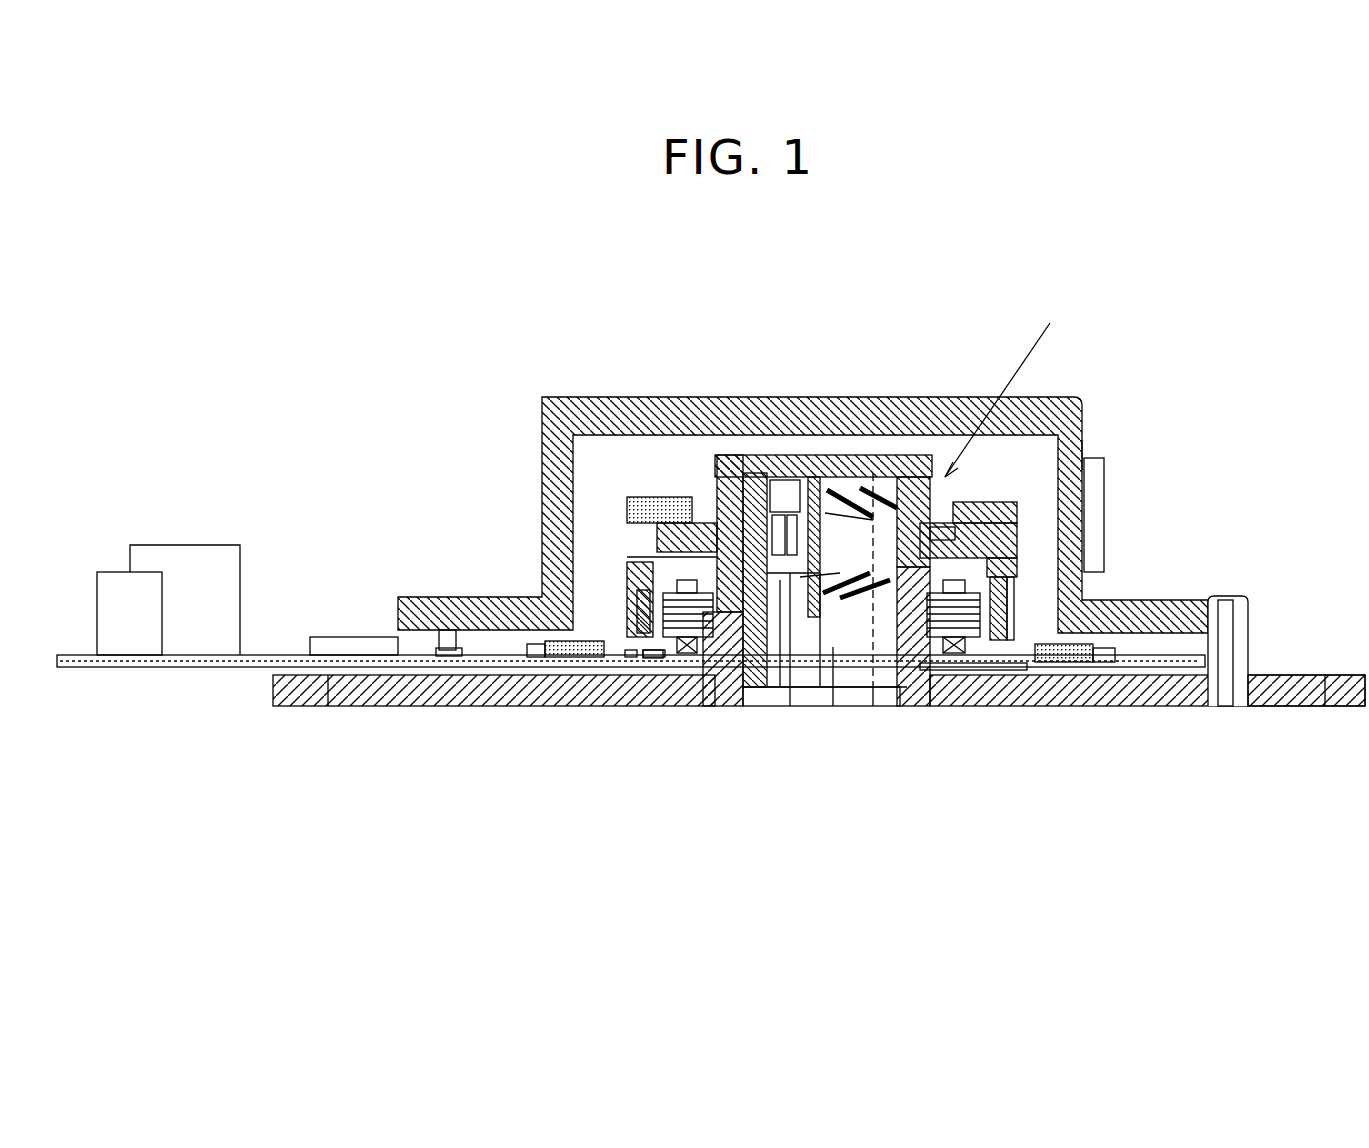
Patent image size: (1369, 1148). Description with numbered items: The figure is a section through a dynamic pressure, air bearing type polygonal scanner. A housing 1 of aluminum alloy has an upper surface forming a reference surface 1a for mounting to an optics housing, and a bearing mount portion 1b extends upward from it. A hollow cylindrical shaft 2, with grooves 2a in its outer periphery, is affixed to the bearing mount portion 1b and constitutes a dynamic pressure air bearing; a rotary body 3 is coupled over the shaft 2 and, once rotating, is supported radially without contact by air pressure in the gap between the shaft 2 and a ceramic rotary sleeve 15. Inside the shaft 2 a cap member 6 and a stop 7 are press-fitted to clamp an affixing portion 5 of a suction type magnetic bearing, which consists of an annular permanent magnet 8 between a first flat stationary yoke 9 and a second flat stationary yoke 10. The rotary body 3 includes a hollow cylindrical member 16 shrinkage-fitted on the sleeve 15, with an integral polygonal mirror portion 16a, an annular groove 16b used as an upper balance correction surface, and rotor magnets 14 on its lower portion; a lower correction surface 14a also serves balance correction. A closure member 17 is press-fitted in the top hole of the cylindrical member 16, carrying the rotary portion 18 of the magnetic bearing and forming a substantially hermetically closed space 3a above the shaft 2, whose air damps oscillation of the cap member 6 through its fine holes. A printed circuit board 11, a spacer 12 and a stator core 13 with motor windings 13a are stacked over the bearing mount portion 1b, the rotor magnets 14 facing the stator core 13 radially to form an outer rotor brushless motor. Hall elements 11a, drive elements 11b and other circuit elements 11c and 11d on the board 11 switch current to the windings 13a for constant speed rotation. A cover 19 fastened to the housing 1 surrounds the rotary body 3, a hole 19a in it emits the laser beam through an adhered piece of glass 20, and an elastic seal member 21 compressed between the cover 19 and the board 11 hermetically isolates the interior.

The housing 1 is at (1195, 712).
The reference surface 1a is at (1288, 715).
The bearing mount portion 1b is at (727, 706).
The hollow cylindrical shaft 2 is at (833, 706).
The grooves 2a is at (865, 478).
The rotary body 3 is at (1006, 386).
The hermetically closed space 3a is at (888, 478).
The affixing portion 5 is at (508, 557).
The cap member 6 is at (787, 706).
The stop 7 is at (762, 480).
The annular permanent magnet 8 is at (735, 532).
The first flat stationary yoke 9 is at (735, 512).
The second flat stationary yoke 10 is at (735, 562).
The printed circuit board 11 is at (253, 667).
The Hall elements 11a is at (642, 706).
The drive elements 11b is at (552, 660).
The circuit elements 11c is at (338, 647).
The circuit elements 11d is at (108, 628).
The spacer 12 is at (700, 695).
The stator core 13 is at (990, 690).
The motor windings 13a is at (957, 706).
The rotor magnets 14 is at (1005, 612).
The lower correction surface 14a is at (1038, 710).
The rotary sleeve 15 is at (905, 706).
The hollow cylindrical member 16 is at (990, 552).
The polygonal mirror portion 16a is at (935, 532).
The annular groove 16b is at (962, 505).
The closure member 17 is at (920, 478).
The rotary portion 18 is at (807, 478).
The cover 19 is at (668, 400).
The hole 19a is at (1090, 455).
The piece of glass 20 is at (1106, 468).
The elastic seal member 21 is at (450, 657).